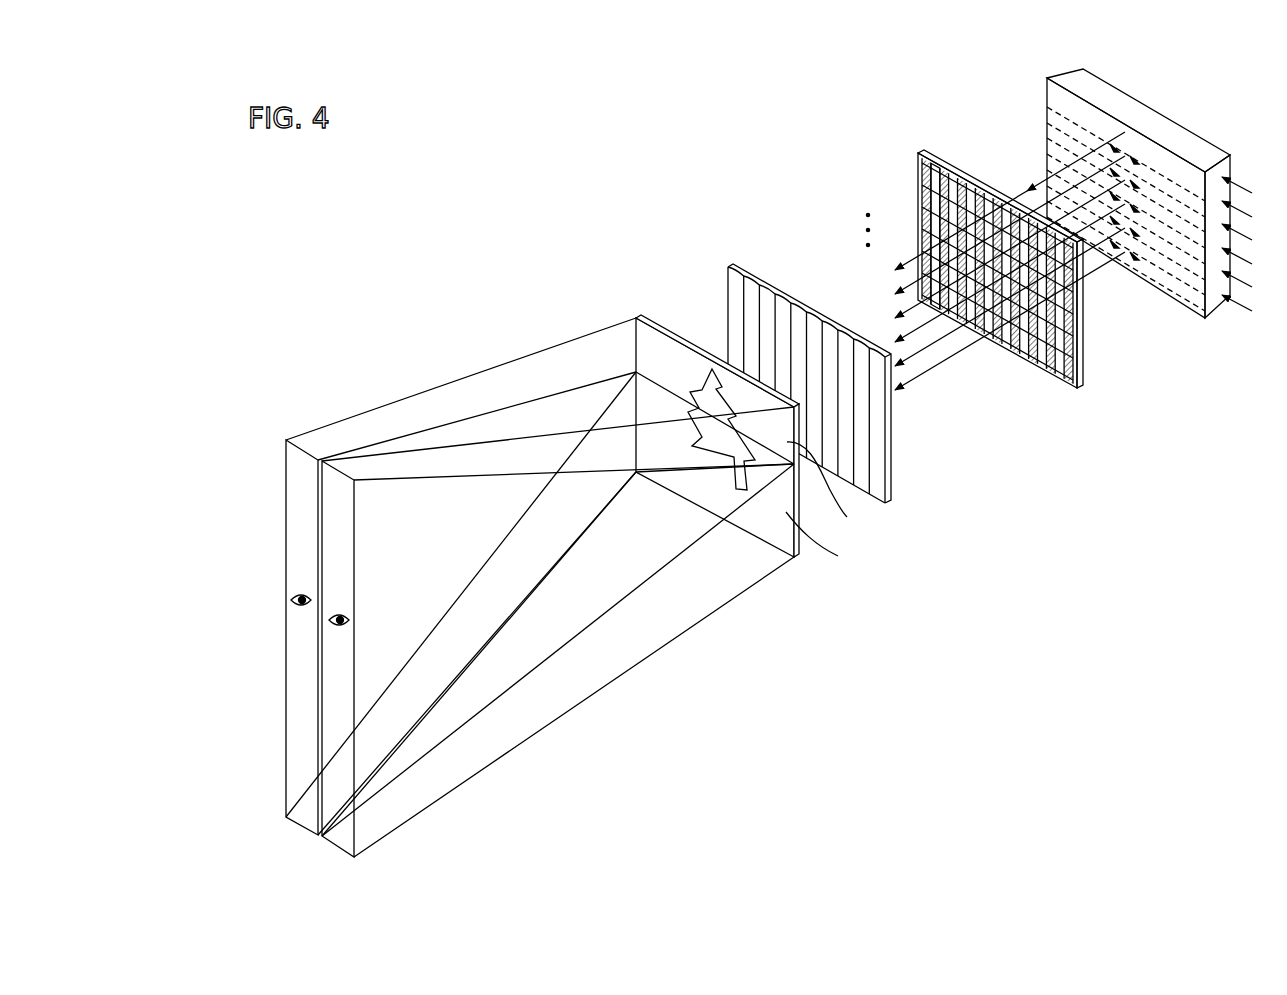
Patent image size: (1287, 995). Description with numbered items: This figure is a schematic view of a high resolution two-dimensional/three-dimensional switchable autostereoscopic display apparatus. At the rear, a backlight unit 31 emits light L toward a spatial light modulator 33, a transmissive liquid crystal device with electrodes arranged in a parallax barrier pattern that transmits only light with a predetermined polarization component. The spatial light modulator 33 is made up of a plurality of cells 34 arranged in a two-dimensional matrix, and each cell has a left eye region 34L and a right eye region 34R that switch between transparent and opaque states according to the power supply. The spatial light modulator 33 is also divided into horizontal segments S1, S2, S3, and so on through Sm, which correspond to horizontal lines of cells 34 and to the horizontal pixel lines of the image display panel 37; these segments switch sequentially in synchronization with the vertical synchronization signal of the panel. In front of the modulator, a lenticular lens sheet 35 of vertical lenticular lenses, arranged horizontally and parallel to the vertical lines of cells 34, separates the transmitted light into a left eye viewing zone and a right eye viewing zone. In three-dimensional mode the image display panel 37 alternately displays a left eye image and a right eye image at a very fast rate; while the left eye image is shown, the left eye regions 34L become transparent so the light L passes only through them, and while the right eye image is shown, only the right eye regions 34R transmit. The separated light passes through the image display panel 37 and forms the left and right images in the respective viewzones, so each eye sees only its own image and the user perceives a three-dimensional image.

The backlight unit 31 is at (1160, 120).
The spatial light modulator 33 is at (967, 223).
The cells 34 is at (990, 221).
The left eye regions 34L is at (924, 156).
The right eye regions 34R is at (936, 168).
The lenticular lens sheet 35 is at (730, 264).
The image display panel 37 is at (636, 316).
The first horizontal segment S1 is at (920, 164).
The second horizontal segment S2 is at (920, 185).
The third horizontal segment S3 is at (920, 207).
The m-th horizontal segment Sm is at (920, 290).
The light L is at (1108, 272).